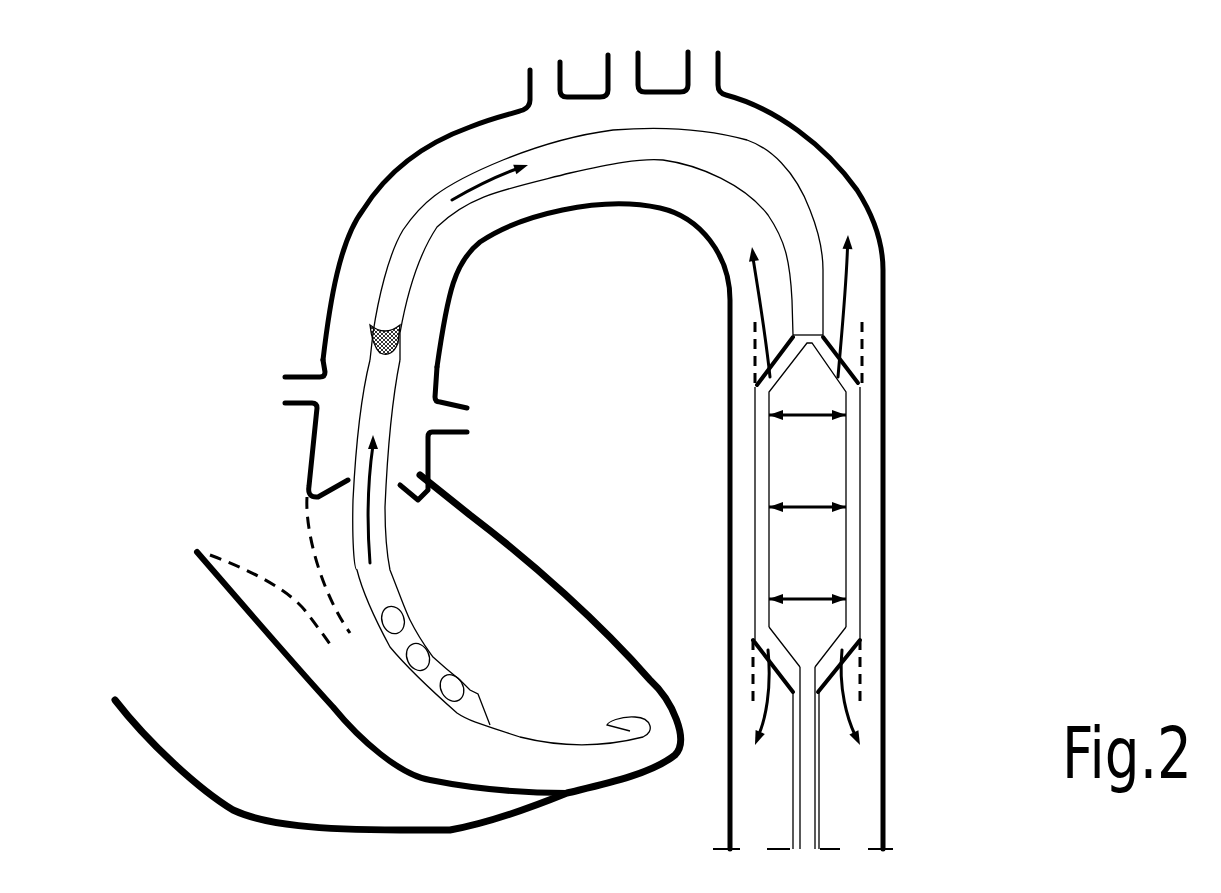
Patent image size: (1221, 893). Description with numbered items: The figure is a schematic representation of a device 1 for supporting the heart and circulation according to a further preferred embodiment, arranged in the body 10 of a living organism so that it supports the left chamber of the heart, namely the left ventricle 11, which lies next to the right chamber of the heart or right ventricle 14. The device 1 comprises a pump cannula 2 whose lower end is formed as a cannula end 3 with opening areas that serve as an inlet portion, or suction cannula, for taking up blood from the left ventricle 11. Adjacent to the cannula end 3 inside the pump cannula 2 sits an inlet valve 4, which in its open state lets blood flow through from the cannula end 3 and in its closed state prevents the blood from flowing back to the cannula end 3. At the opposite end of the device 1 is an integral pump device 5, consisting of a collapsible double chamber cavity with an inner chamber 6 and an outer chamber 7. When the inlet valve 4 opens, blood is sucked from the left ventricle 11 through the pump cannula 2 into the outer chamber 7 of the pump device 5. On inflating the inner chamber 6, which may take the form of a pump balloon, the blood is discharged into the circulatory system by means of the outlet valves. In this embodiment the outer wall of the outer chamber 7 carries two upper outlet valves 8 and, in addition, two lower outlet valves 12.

The device 1 is at (800, 144).
The pump cannula 2 is at (452, 180).
The cannula end with inlet aperture 3 is at (425, 685).
The inlet valve 4 is at (398, 355).
The pump device 5 is at (870, 553).
The inner chamber 6 is at (827, 453).
The outer chamber 7 is at (853, 492).
The outlet valve 8 is at (767, 367).
The body 10 is at (601, 360).
The left chamber of the heart/left ventricle 11 is at (500, 610).
The outlet valve 12 is at (847, 660).
The right chamber of the heart/right ventricle 14 is at (238, 742).